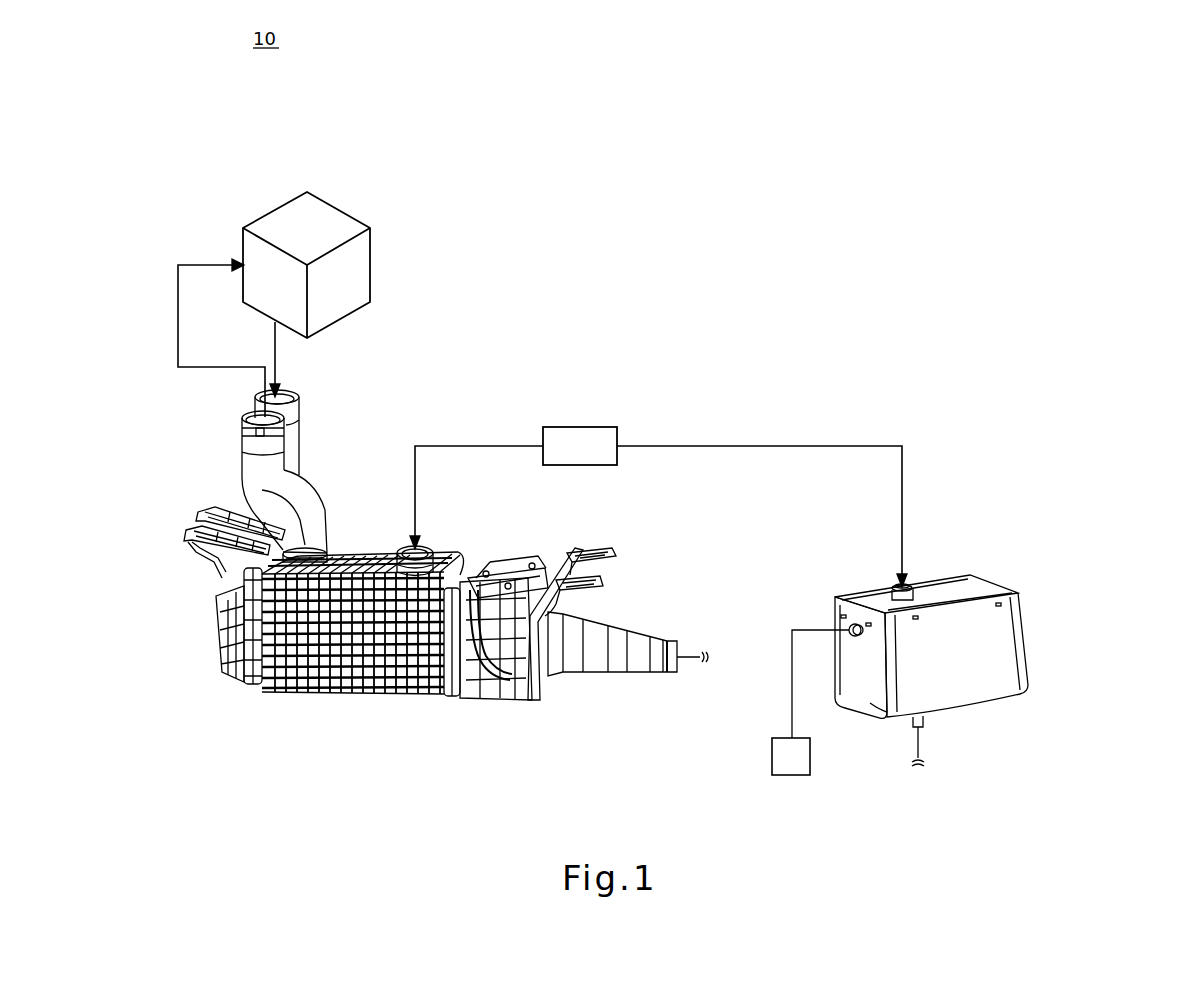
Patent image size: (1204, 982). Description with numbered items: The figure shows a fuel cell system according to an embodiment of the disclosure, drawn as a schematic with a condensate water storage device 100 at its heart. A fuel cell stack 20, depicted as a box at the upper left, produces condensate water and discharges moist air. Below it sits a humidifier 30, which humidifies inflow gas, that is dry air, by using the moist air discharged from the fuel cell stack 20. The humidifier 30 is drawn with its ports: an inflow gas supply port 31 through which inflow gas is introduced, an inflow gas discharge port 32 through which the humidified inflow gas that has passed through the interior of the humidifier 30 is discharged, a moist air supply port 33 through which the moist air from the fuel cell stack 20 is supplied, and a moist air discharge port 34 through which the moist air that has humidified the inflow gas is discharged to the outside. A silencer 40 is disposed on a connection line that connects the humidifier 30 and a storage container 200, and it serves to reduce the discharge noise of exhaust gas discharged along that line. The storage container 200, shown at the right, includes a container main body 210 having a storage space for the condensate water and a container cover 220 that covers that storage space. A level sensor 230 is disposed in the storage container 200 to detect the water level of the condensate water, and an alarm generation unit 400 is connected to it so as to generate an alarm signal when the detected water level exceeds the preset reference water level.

The fuel cell stack 20 is at (307, 192).
The humidifier 30 is at (446, 585).
The inflow gas supply port 31 is at (678, 664).
The inflow gas discharge port 32 is at (247, 418).
The moist air supply port 33 is at (292, 398).
The moist air discharge port 34 is at (409, 547).
The silencer 40 is at (580, 427).
The condensate water storage device 100 is at (970, 619).
The storage container 200 is at (970, 670).
The container main body 210 is at (1003, 648).
The container cover 220 is at (990, 590).
The level sensor 230 is at (851, 626).
The alarm generation unit 400 is at (772, 757).